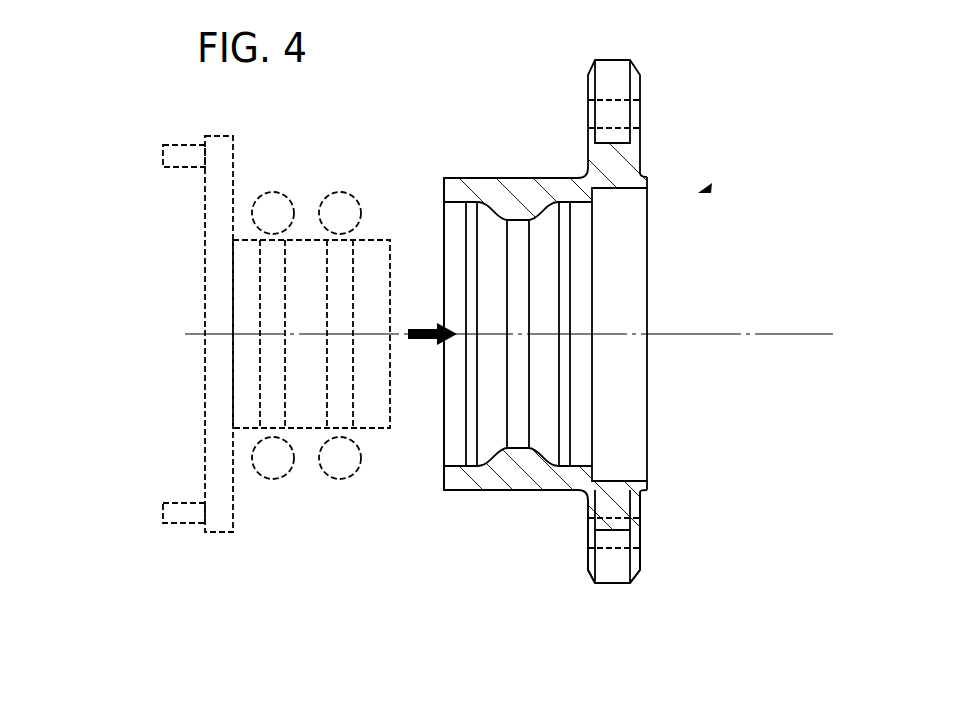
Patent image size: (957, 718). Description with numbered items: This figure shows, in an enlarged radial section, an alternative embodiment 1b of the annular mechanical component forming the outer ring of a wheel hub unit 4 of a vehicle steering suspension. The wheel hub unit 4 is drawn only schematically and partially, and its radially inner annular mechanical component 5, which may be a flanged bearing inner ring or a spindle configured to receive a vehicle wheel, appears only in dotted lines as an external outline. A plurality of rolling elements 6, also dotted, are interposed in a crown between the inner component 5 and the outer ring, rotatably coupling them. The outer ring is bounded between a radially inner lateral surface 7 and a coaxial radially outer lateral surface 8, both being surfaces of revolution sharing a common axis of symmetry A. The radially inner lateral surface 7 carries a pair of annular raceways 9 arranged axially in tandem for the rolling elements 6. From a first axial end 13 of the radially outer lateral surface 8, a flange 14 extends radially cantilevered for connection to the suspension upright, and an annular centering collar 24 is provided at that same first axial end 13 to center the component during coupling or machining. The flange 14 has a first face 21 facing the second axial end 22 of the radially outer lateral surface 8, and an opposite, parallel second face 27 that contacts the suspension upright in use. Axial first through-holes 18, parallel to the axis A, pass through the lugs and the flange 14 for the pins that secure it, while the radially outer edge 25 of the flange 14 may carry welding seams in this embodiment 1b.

The annular mechanical component (alternative embodiment) 1b is at (708, 190).
The wheel hub unit 4 is at (352, 490).
The annular mechanical component 5 is at (270, 303).
The rolling elements 6 is at (336, 198).
The radially inner lateral surface 7 is at (590, 241).
The radially outer lateral surface 8 is at (488, 177).
The annular raceway 9 is at (498, 420).
The first axial end 13 is at (563, 176).
The flange 14 is at (640, 558).
The first through-hole 18 is at (618, 113).
The first face 21 is at (588, 508).
The second axial end 22 is at (450, 478).
The annular centering collar 24 is at (648, 187).
The radially outer edge 25 is at (612, 145).
The second face 27 is at (633, 505).
The axis of symmetry A is at (753, 334).